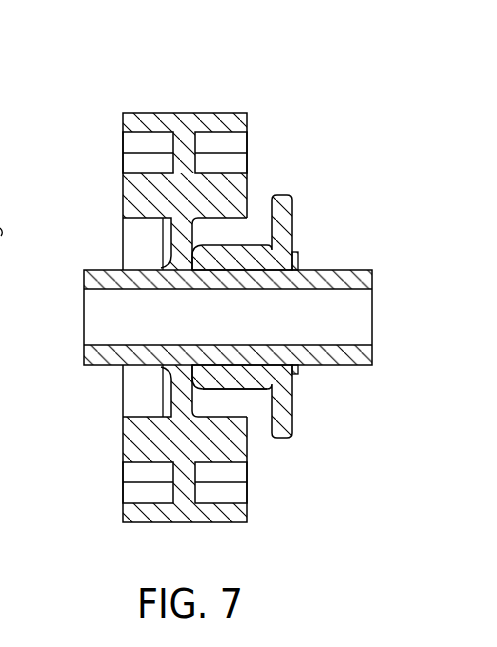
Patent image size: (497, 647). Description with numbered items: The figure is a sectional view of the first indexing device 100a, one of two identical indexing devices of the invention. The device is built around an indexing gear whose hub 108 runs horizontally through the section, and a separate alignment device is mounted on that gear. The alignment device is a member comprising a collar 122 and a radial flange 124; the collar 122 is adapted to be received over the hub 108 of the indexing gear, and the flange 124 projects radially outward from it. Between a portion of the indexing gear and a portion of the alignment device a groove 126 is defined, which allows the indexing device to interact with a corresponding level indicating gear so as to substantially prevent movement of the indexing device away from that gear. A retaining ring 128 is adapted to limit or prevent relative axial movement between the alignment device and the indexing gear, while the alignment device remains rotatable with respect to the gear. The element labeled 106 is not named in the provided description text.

The first indexing device 100a is at (182, 95).
The rotor hub body 106 is at (235, 113).
The groove 126 is at (261, 192).
The retaining ring 128 is at (298, 255).
The radial flange 124 is at (294, 406).
The collar 122 is at (252, 391).
The hub 108 is at (97, 366).